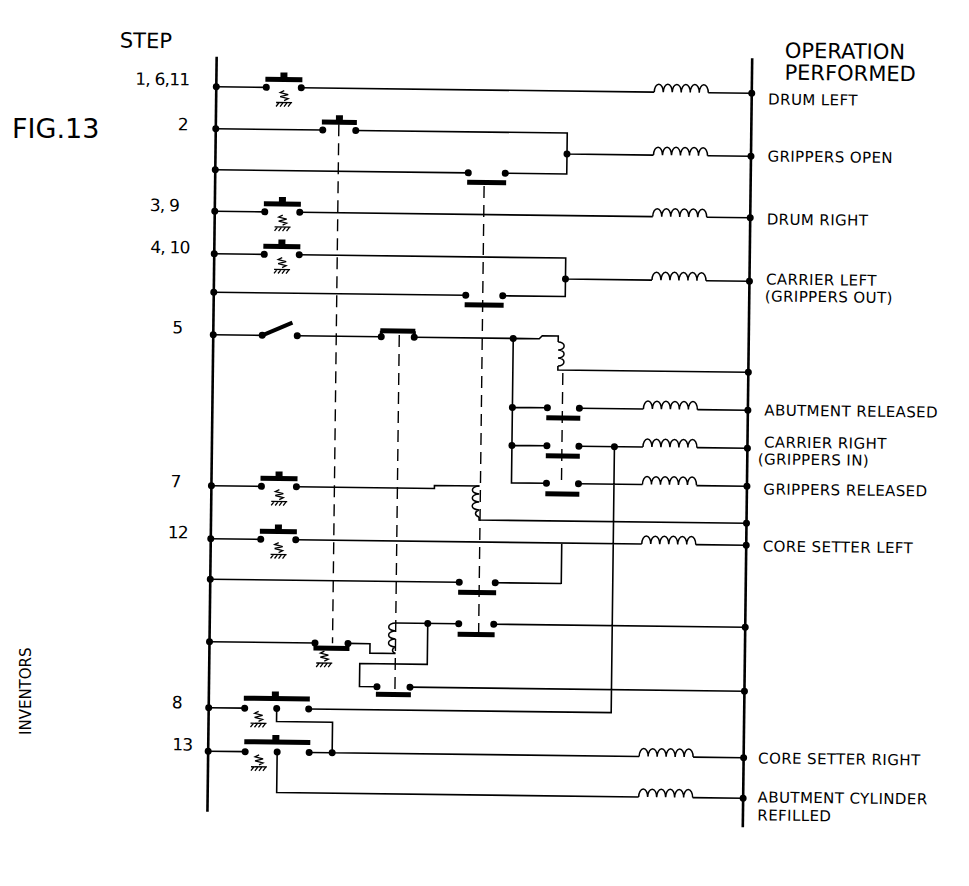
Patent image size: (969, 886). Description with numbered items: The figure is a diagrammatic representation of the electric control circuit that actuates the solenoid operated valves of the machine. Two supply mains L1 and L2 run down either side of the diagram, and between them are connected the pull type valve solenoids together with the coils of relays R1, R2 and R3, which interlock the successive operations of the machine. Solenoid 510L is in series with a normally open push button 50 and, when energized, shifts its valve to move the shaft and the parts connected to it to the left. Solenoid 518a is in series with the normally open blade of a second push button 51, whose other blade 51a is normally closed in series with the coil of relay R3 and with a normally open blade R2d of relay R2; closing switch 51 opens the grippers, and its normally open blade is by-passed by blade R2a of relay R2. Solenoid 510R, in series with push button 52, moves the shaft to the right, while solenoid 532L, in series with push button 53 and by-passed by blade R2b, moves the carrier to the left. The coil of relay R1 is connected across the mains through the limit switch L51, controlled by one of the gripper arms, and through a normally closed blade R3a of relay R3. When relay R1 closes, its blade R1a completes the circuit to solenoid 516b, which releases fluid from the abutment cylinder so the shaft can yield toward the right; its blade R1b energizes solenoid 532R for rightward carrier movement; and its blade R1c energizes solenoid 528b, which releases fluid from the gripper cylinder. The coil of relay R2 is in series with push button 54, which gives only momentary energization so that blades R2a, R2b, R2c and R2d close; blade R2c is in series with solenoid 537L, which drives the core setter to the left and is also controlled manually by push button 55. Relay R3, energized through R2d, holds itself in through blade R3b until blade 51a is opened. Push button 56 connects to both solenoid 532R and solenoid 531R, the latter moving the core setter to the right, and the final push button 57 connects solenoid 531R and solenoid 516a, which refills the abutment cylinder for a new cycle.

The supply main L1 is at (213, 424).
The supply main L2 is at (744, 436).
The push button station 50 is at (289, 76).
The push button station 51 is at (347, 128).
The normally closed blade 51a is at (349, 644).
The push button 52 is at (287, 206).
The push button station 53 is at (291, 251).
The push button 54 is at (284, 475).
The push button 55 is at (286, 535).
The push button 56 is at (262, 697).
The push button station 57 is at (297, 752).
The limit switch L51 is at (280, 333).
The relay R1 is at (567, 349).
The relay blade R1a is at (551, 420).
The relay blade R1b is at (551, 455).
The relay blade R1c is at (551, 493).
The relay R2 is at (473, 509).
The relay blade R2a is at (487, 179).
The relay blade R2b is at (498, 308).
The relay blade R2c is at (490, 591).
The relay blade R2d is at (492, 637).
The relay R3 is at (400, 629).
The relay blade R3a is at (398, 332).
The relay blade R3b is at (411, 696).
The valve solenoid 510L is at (683, 78).
The valve solenoid 518a is at (682, 141).
The valve solenoid 510R is at (683, 201).
The valve solenoid 532L is at (681, 262).
The valve solenoid 516b is at (675, 393).
The valve solenoid 532R is at (675, 432).
The valve solenoid 528b is at (674, 498).
The valve solenoid 537L is at (672, 555).
The valve solenoid 531R is at (670, 740).
The valve solenoid 516a is at (669, 782).